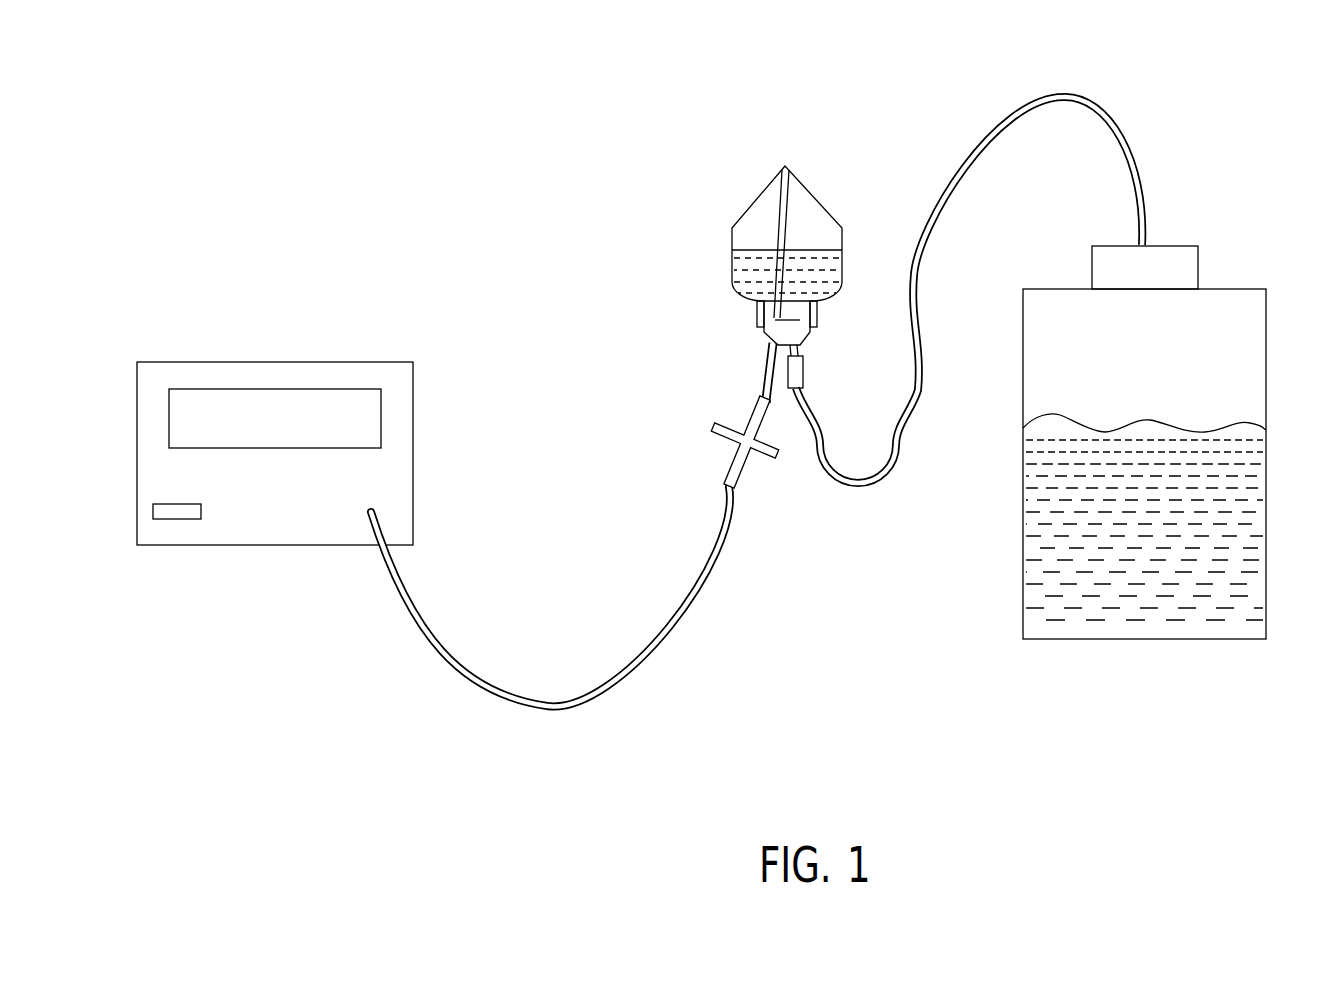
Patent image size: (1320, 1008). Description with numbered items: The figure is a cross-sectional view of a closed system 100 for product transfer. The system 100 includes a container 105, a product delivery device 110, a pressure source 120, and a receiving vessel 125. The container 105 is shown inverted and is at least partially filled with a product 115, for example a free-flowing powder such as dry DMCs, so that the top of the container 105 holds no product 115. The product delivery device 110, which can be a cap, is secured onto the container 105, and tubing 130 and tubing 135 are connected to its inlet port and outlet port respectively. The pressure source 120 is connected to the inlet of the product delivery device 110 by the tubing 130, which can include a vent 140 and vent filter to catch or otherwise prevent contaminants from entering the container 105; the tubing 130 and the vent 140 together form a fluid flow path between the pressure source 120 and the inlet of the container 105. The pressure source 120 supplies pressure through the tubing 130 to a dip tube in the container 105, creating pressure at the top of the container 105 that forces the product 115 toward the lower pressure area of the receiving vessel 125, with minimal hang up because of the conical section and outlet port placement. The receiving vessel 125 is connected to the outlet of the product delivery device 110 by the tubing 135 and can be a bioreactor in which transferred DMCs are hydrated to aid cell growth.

The closed system 100 is at (1182, 761).
The container 105 is at (801, 227).
The product delivery device 110 is at (760, 323).
The product 115 is at (818, 288).
The pressure source 120 is at (413, 385).
The receiving vessel 125 is at (1023, 562).
The tubing 130 is at (690, 628).
The tubing 135 is at (1072, 97).
The vent 140 is at (713, 426).